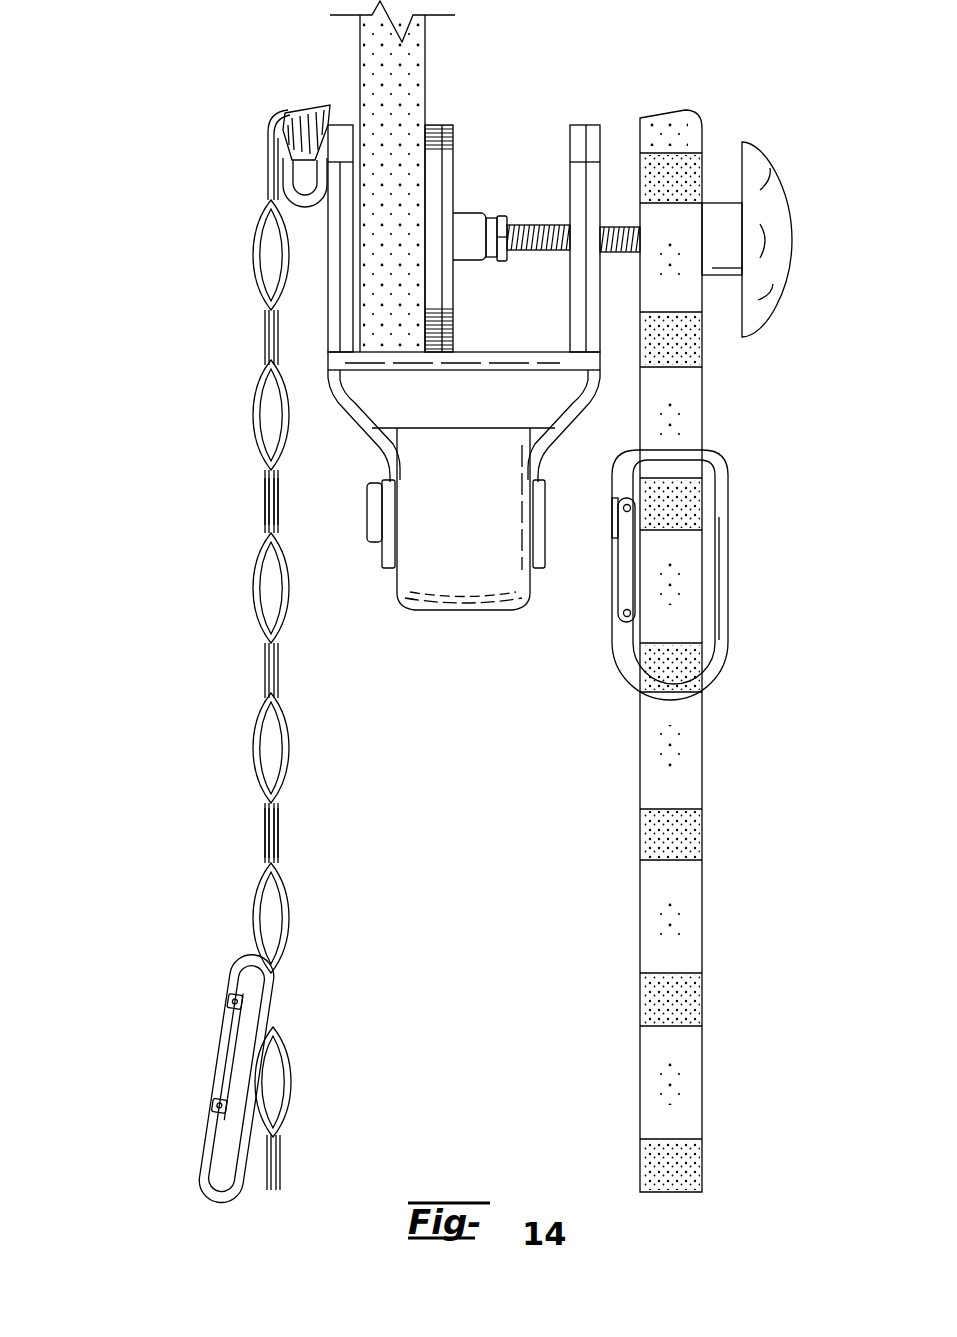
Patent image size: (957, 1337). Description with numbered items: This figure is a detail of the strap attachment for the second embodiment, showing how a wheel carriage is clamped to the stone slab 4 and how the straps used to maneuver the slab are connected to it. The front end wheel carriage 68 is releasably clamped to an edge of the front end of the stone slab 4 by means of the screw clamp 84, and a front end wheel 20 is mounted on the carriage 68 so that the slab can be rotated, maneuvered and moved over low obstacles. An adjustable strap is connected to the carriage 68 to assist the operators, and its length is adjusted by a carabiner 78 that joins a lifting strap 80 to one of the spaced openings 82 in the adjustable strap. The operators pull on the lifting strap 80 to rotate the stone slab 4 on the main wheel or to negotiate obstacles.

The stone slab 4 is at (357, 62).
The front end wheel 20 is at (493, 612).
The front end wheel carriage 68 is at (330, 357).
The carabiner 78 is at (727, 572).
The lifting strap 80 is at (252, 742).
The spaced openings 82 is at (268, 750).
The screw clamp 84 is at (537, 223).